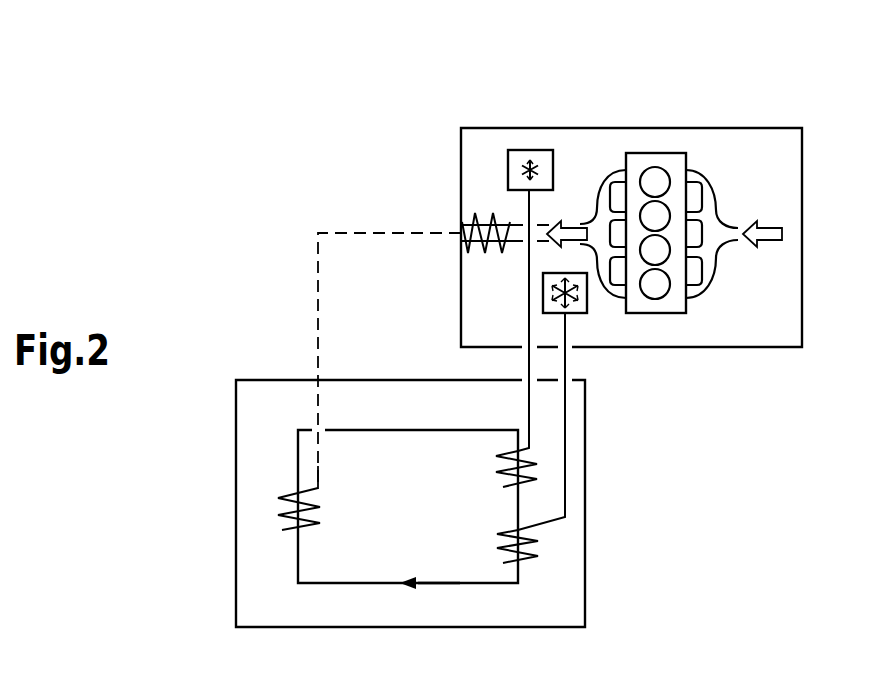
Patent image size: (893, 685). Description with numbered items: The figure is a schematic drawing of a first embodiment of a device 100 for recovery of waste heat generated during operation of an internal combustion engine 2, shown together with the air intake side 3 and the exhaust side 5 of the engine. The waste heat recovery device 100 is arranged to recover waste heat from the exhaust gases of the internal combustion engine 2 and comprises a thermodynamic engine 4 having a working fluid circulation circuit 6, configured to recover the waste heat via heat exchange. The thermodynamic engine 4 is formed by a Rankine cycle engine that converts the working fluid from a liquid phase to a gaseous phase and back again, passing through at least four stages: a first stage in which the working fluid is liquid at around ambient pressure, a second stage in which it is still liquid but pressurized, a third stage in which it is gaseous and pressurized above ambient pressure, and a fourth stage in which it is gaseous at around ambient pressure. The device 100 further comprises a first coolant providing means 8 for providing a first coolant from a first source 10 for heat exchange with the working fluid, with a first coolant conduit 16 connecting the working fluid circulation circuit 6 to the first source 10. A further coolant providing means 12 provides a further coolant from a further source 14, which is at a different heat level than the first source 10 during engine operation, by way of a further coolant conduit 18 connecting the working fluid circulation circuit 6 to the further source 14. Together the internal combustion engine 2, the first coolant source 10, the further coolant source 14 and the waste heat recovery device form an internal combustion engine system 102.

The waste heat recovery device 100 is at (743, 87).
The internal combustion engine system 102 is at (826, 113).
The internal combustion engine 2 is at (642, 153).
The air intake side 3 is at (708, 195).
The exhaust side 5 is at (600, 189).
The first coolant providing means 8 is at (496, 322).
The first coolant source 10 is at (521, 150).
The further coolant source 14 is at (585, 315).
The first coolant conduit 16 is at (529, 296).
The further coolant conduit 18 is at (565, 482).
The further coolant providing means 12 is at (583, 442).
The thermodynamic engine 4 is at (585, 555).
The working fluid circulation circuit 6 is at (452, 584).